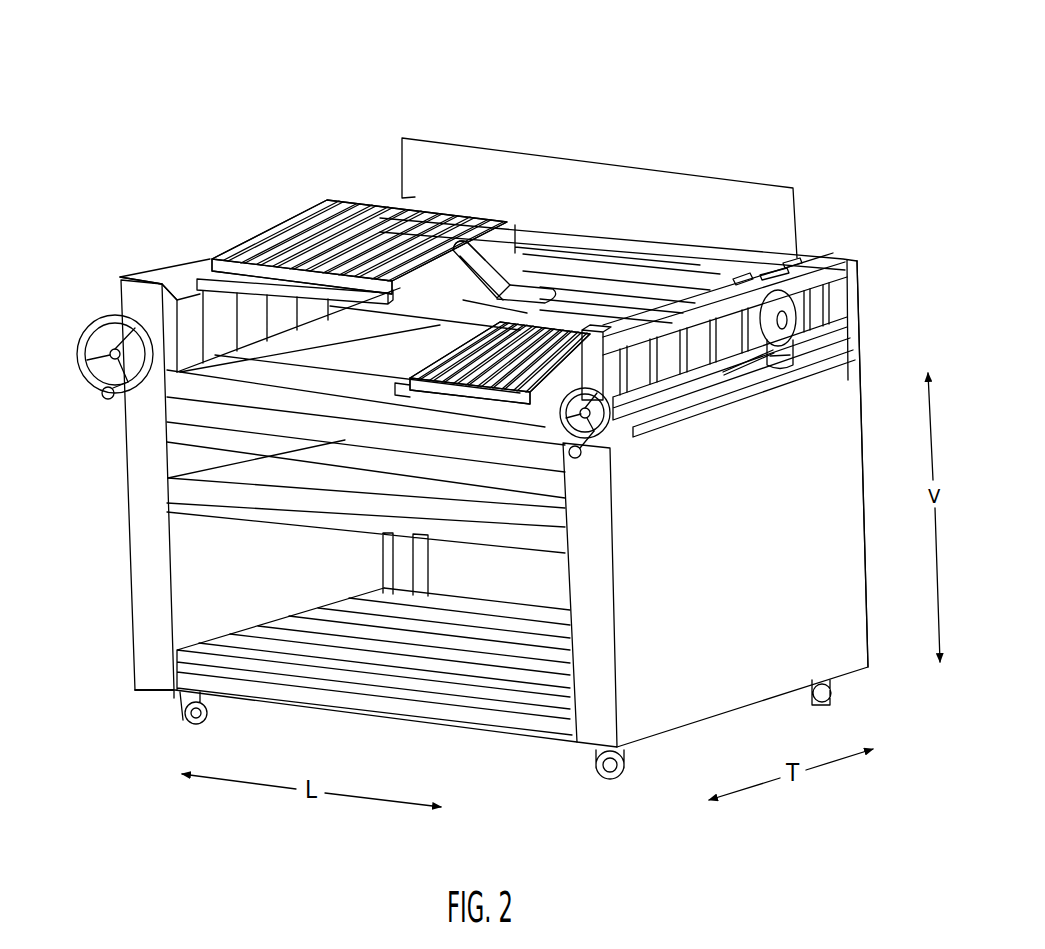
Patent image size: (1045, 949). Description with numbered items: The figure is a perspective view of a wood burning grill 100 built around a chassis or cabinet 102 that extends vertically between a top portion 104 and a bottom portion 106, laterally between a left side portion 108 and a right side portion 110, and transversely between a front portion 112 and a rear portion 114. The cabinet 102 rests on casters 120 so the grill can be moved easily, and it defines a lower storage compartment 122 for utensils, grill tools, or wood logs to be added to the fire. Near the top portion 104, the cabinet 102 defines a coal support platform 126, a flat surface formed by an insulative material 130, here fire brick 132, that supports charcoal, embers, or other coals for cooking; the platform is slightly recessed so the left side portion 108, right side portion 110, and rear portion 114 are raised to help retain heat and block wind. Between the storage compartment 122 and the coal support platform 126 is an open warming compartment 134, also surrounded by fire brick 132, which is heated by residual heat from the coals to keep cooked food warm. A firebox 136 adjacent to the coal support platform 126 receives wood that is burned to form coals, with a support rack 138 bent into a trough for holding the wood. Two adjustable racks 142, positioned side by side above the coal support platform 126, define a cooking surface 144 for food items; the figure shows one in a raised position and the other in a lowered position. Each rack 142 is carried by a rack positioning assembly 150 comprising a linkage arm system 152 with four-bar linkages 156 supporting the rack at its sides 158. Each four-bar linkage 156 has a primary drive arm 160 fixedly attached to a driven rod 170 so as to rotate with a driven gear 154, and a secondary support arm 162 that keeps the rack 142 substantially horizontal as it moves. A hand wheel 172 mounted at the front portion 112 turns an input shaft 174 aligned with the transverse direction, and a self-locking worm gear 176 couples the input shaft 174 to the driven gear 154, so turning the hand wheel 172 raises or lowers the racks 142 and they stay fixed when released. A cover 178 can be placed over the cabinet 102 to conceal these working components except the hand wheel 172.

The wood burning grill 100 is at (138, 73).
The cabinet 102 is at (147, 553).
The top portion 104 is at (166, 257).
The bottom portion 106 is at (157, 695).
The left side portion 108 is at (126, 650).
The right side portion 110 is at (656, 720).
The front portion 112 is at (542, 735).
The rear portion 114 is at (866, 386).
The casters 120 is at (192, 722).
The lower storage compartment 122 is at (408, 652).
The coal support platform 126 is at (272, 368).
The insulative material 130 is at (326, 368).
The fire brick 132 is at (376, 380).
The warming compartment 134 is at (498, 497).
The firebox 136 is at (704, 202).
The support rack 138 is at (645, 184).
The adjustable racks 142 is at (344, 210).
The cooking surface 144 is at (306, 225).
The rack positioning assembly 150 is at (711, 410).
The linkage arm system 152 is at (519, 261).
The driven gear 154 is at (785, 303).
The four-bar linkage 156 is at (468, 245).
The sides of rack 158 is at (250, 228).
The primary drive arm 160 is at (484, 290).
The secondary support arm 162 is at (452, 345).
The driven rod 170 is at (600, 293).
The hand wheel 172 is at (83, 338).
The input shaft 174 is at (745, 378).
The worm gear 176 is at (813, 383).
The cover 178 is at (200, 263).